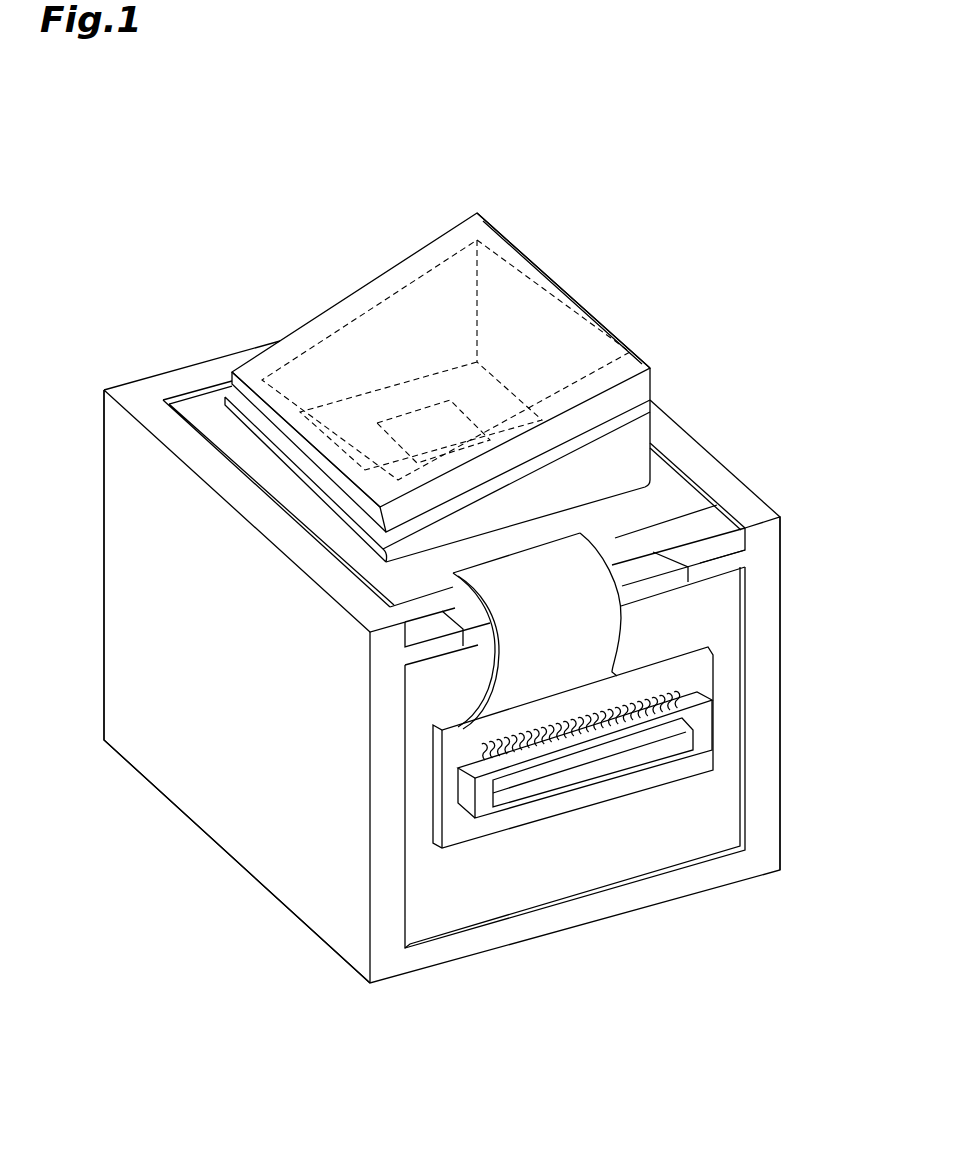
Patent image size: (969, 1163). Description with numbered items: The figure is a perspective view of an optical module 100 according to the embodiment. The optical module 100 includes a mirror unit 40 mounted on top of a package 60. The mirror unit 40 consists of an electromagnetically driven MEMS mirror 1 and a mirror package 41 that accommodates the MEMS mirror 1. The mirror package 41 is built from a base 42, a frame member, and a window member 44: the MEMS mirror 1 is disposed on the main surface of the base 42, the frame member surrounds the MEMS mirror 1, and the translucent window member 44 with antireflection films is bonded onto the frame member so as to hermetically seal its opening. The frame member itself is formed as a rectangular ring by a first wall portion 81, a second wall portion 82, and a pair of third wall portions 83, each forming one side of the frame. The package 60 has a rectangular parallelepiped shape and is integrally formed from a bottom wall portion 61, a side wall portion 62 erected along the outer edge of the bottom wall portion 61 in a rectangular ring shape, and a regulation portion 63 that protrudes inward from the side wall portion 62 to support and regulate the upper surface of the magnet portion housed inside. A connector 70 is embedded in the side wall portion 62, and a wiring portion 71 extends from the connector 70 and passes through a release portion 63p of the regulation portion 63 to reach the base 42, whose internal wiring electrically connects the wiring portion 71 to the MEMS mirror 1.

The optical module 100 is at (736, 196).
The MEMS mirror 1 is at (393, 334).
The mirror unit 40 is at (477, 213).
The window member 44 is at (455, 310).
The mirror package 41 is at (653, 392).
The base 42 is at (667, 490).
The first wall portion 81 is at (300, 470).
The second wall portion 82 is at (552, 275).
The third wall portion 83 is at (593, 443).
The package 60 is at (780, 517).
The bottom wall portion 61 is at (592, 905).
The side wall portion 62 is at (240, 728).
The regulation portion 63 is at (722, 540).
The release portion 63p is at (729, 549).
The connector 70 is at (707, 680).
The wiring portion 71 is at (600, 633).